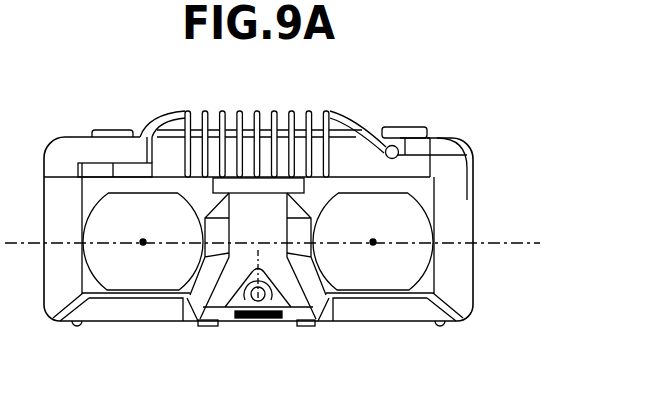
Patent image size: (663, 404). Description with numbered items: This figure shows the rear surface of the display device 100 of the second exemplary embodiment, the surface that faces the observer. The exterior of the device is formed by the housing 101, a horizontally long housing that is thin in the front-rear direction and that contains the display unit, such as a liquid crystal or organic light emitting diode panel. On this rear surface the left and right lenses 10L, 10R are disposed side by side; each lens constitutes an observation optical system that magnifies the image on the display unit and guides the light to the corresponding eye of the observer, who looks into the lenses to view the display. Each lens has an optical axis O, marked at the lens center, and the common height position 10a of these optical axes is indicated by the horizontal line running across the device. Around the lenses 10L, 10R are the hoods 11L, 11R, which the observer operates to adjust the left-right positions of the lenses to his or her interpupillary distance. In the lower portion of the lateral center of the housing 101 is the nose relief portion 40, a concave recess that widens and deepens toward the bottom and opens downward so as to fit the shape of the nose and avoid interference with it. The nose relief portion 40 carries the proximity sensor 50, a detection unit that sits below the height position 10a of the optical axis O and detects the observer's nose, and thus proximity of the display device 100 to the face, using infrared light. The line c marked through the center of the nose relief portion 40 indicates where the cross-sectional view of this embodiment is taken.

The display device 100 is at (416, 108).
The housing 101 is at (463, 138).
The optical axis O is at (372, 239).
The height position of the optical axis 10a is at (294, 245).
The left lens 10L is at (143, 275).
The right lens 10R is at (413, 265).
The left hood 11L is at (98, 313).
The right hood 11R is at (412, 313).
The nose relief portion 40 is at (292, 305).
The proximity sensor 50 is at (267, 323).
The line c- c is at (282, 260).